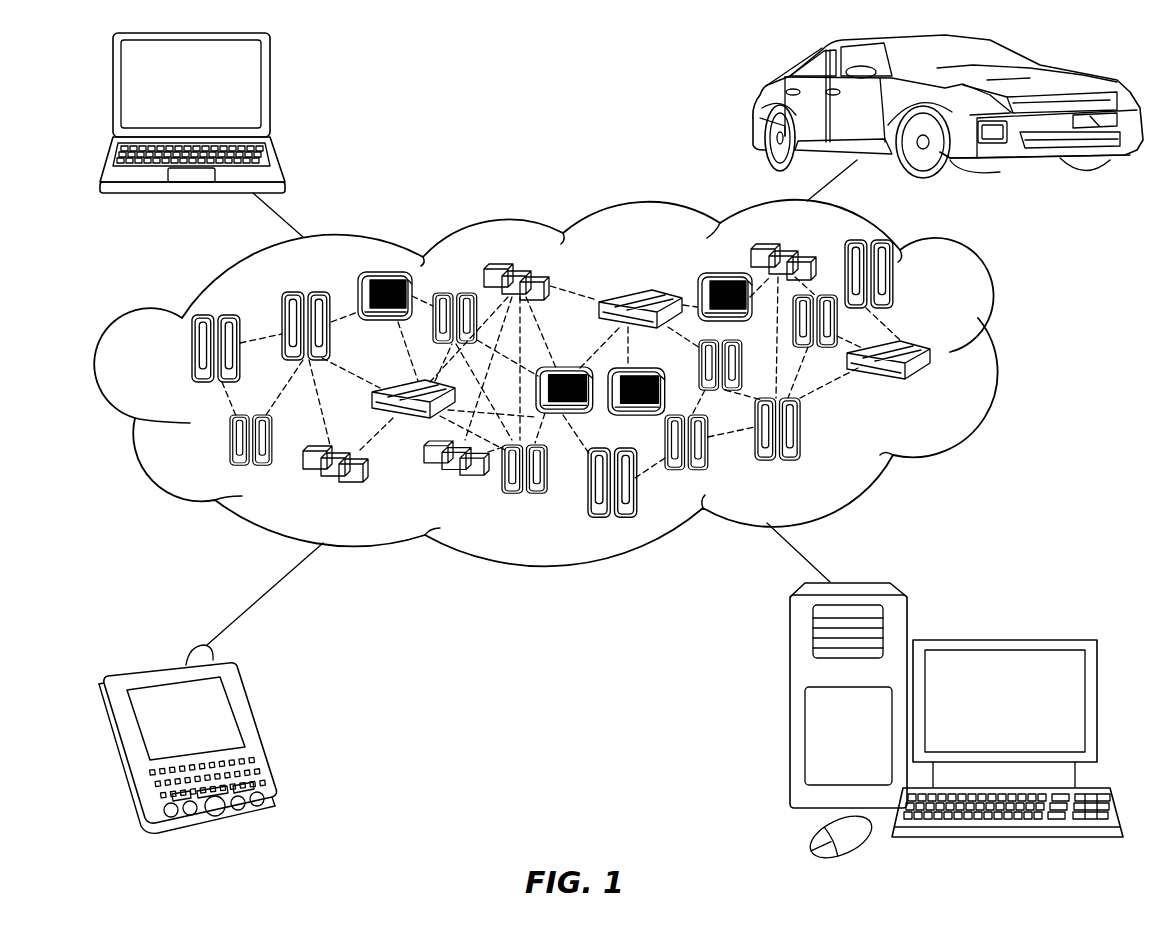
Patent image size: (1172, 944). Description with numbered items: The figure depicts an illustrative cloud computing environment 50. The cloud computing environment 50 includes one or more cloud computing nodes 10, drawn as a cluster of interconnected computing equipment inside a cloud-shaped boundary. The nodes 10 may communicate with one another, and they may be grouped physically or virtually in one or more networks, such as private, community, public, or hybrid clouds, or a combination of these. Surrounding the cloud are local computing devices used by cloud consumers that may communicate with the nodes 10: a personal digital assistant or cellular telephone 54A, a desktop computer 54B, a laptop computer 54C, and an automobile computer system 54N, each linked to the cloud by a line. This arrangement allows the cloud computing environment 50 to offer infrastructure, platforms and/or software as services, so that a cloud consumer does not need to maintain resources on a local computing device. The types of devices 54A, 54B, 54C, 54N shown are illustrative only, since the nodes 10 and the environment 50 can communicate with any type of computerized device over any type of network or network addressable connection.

The cloud computing node 10 is at (950, 389).
The cloud computing environment 50 is at (999, 360).
The personal digital assistant or cellular telephone 54A is at (263, 731).
The desktop computer 54B is at (1002, 640).
The laptop computer 54C is at (271, 93).
The automobile computer system 54N is at (757, 108).